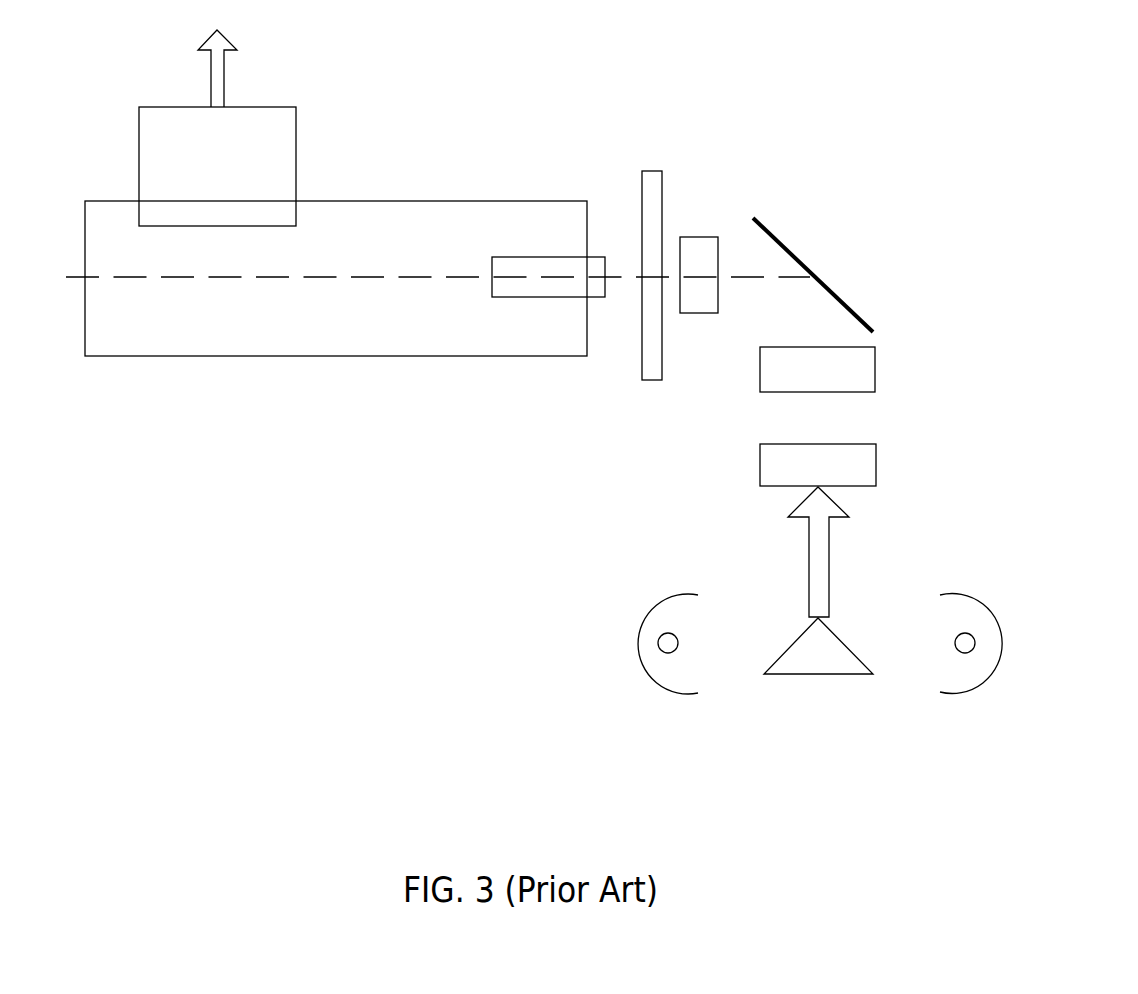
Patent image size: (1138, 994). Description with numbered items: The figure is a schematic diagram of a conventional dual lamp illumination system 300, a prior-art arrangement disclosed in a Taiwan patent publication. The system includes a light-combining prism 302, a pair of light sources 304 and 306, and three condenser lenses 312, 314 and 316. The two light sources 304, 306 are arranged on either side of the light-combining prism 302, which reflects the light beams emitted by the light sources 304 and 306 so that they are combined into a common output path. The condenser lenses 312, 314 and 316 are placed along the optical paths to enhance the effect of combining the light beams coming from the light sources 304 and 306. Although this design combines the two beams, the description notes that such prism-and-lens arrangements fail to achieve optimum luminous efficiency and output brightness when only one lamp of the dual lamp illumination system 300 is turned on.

The dual lamp illumination system 300 is at (1102, 123).
The light-combining prism 302 is at (820, 675).
The light source 304 is at (655, 608).
The light source 306 is at (978, 603).
The condenser lens 312 is at (876, 463).
The condenser lens 314 is at (875, 370).
The condenser lens 316 is at (698, 237).